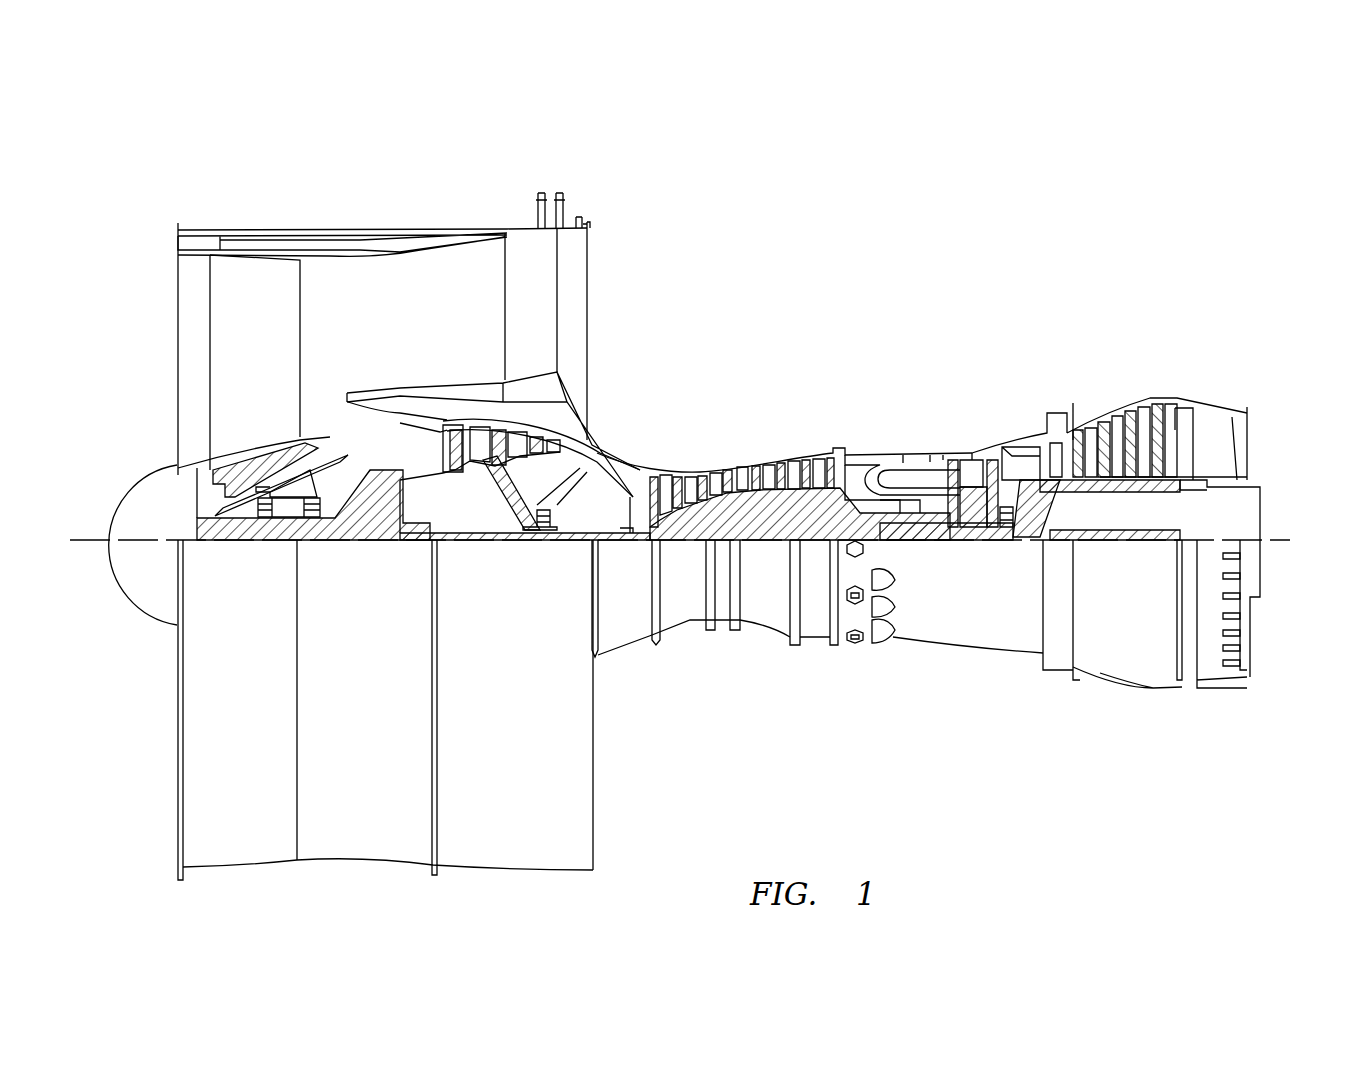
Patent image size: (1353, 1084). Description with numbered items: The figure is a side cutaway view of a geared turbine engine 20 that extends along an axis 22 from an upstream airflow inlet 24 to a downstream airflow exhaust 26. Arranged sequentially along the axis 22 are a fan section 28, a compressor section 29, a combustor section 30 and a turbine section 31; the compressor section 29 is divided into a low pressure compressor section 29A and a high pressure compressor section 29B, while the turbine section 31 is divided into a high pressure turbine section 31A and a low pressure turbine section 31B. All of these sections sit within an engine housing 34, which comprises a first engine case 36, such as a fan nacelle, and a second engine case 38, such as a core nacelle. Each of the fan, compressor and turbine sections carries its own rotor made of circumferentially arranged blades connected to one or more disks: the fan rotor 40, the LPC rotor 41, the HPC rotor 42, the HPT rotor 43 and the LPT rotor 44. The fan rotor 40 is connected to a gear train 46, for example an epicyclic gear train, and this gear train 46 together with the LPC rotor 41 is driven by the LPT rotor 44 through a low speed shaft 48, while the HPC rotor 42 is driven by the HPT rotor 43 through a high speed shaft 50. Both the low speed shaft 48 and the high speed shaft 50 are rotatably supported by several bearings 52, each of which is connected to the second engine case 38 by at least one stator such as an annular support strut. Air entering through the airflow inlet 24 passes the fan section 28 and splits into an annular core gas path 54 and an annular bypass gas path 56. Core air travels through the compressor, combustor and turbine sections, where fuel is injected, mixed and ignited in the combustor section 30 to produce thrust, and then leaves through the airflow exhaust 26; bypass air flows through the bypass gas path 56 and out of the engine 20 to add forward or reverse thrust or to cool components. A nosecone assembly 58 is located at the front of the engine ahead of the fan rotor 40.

The geared turbine engine 20 is at (128, 195).
The axis 22 is at (1283, 540).
The airflow inlet 24 is at (178, 278).
The airflow exhaust 26 is at (1248, 440).
The fan section 28 is at (352, 206).
The compressor section 29 is at (815, 134).
The low pressure compressor section 29A is at (592, 193).
The high pressure compressor section 29B is at (812, 363).
The combustor section 30 is at (940, 366).
The turbine section 31 is at (1208, 296).
The high pressure turbine section 31A is at (1020, 366).
The low pressure turbine section 31B is at (1208, 366).
The engine housing 34 is at (622, 695).
The first engine case 36 is at (520, 875).
The second engine case 38 is at (818, 645).
The fan rotor 40 is at (197, 468).
The LPC rotor 41 is at (483, 465).
The HPC rotor 42 is at (768, 500).
The HPT rotor 43 is at (968, 543).
The LPT rotor 44 is at (1113, 485).
The gear train 46 is at (385, 545).
The low speed shaft 48 is at (1128, 545).
The high speed shaft 50 is at (905, 535).
The bearings 52 is at (268, 520).
The core gas path 54 is at (605, 463).
The bypass gas path 56 is at (411, 331).
The nosecone assembly 58 is at (135, 610).